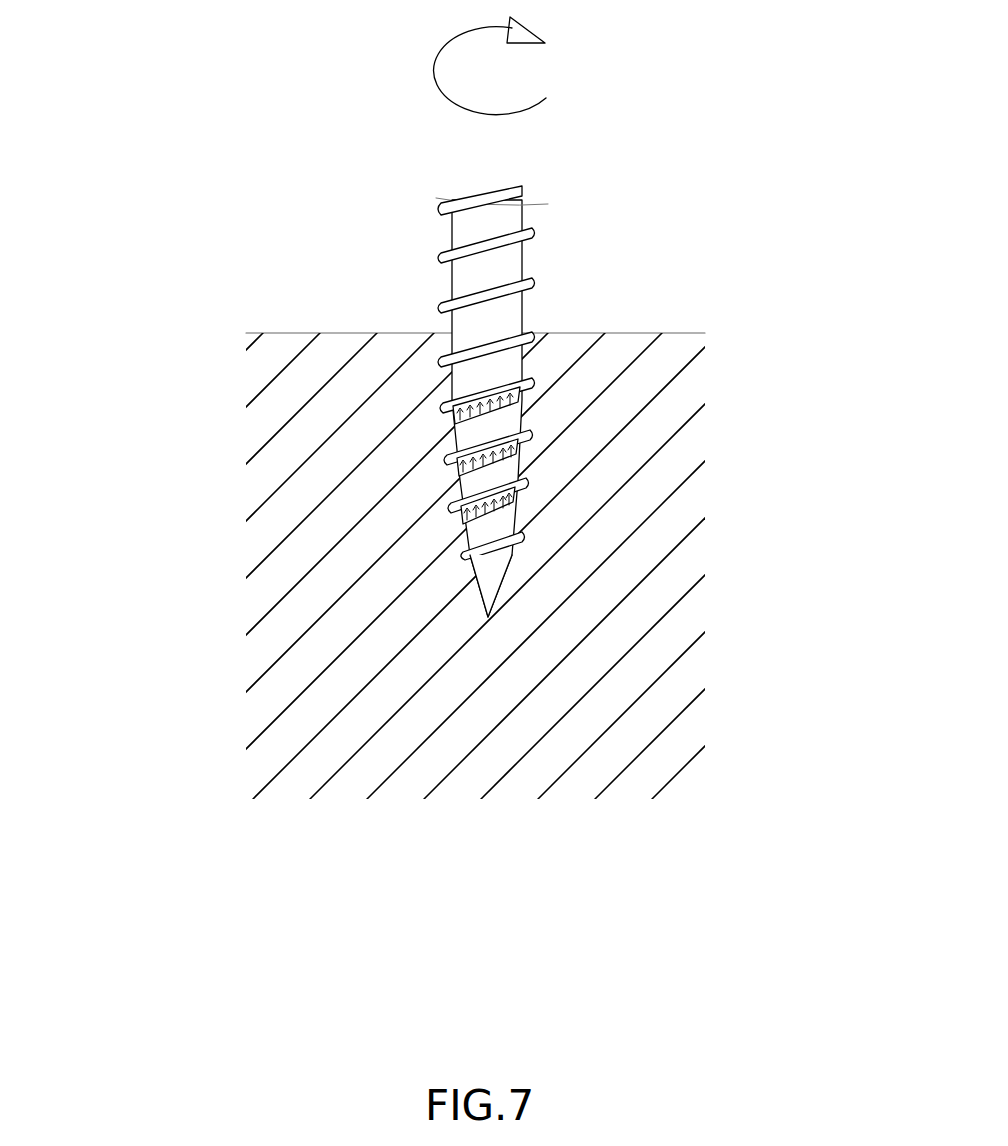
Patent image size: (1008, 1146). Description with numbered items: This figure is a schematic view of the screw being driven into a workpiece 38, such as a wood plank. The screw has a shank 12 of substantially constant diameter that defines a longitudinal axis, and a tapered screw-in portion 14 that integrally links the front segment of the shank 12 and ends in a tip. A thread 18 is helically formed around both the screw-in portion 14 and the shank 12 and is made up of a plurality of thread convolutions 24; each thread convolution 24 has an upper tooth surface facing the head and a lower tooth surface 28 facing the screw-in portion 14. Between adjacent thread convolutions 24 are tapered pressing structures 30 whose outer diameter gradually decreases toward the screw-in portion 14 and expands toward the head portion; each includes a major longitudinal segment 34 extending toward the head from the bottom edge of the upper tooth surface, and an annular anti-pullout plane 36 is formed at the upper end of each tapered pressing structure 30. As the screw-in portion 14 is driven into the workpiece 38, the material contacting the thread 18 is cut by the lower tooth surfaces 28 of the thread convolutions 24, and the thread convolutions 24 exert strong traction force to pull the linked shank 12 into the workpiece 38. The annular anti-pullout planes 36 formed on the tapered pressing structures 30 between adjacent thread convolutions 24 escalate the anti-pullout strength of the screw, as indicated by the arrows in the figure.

The shank 12 is at (480, 232).
The screw-in portion 14 is at (493, 578).
The thread 18 is at (535, 330).
The thread convolution 24 is at (532, 235).
The lower tooth surface 28 is at (453, 510).
The tapered pressing structure 30 is at (525, 405).
The major longitudinal segment 34 is at (520, 478).
The annular anti-pullout plane 36 is at (522, 465).
The workpiece 38 is at (325, 443).